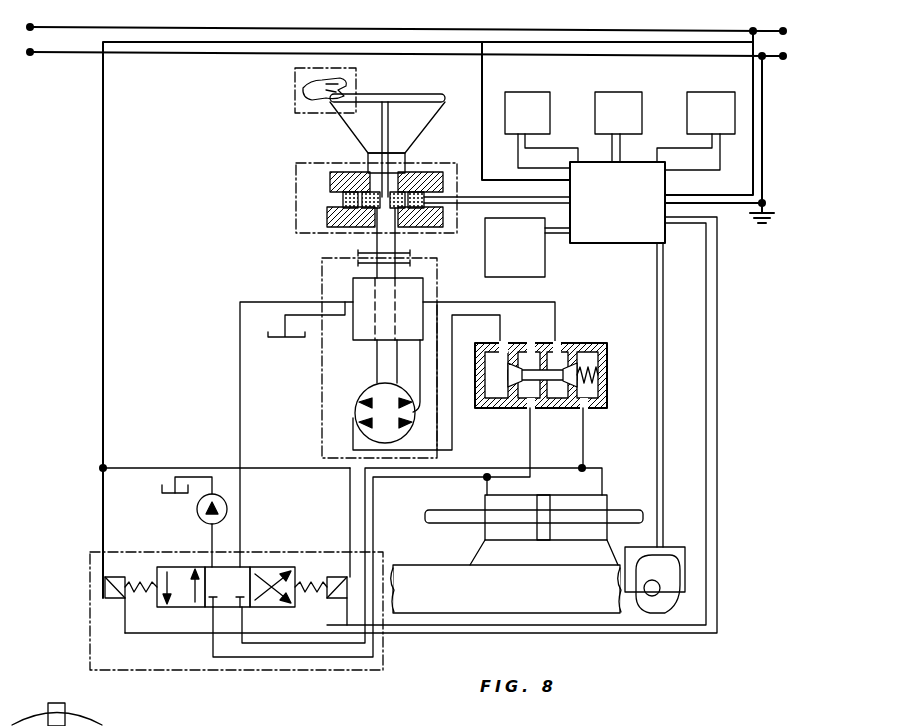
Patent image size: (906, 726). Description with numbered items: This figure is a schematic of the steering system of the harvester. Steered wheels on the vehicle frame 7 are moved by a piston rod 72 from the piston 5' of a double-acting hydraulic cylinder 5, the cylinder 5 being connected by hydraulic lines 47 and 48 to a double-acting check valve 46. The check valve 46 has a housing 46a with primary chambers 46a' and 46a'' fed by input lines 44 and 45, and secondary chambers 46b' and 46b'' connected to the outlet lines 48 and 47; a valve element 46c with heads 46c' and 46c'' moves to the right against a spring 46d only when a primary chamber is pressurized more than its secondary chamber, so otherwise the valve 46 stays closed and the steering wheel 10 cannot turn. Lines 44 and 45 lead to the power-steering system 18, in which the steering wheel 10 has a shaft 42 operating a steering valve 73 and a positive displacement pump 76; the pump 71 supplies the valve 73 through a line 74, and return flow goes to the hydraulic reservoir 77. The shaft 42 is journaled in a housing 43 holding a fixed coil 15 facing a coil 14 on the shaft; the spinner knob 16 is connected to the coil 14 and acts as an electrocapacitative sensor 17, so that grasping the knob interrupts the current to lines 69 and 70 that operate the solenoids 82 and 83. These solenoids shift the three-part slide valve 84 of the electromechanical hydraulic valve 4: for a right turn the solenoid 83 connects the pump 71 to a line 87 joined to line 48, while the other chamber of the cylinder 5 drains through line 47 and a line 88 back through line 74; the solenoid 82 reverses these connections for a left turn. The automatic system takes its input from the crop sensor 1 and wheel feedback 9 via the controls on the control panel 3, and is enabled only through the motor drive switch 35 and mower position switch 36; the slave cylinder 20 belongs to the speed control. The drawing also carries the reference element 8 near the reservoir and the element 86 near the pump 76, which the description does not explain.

The crop sensor 1 is at (540, 96).
The control panel 3 is at (612, 215).
The electromechanical hydraulic valve 4 is at (203, 569).
The hydraulic cylinder 5 is at (557, 508).
The piston 5' is at (547, 501).
The vehicle frame 7 is at (575, 602).
The tank assembly 8 is at (492, 613).
The feedback 9 is at (676, 552).
The steering wheel 10 is at (452, 91).
The coil 14 is at (402, 226).
The fixed coil 15 is at (298, 170).
The spinner knob 16 is at (304, 96).
The sensor 17 is at (362, 82).
The power-steering system 18 is at (320, 271).
The slave cylinder 20 is at (526, 258).
The motor drive switch 35 is at (736, 82).
The mower position switch 36 is at (644, 80).
The shaft 42 is at (368, 226).
The housing 43 is at (330, 220).
The hydraulic line 44 is at (486, 322).
The hydraulic line 45 is at (564, 347).
The double-acting check valve 46 is at (608, 382).
The housing 46a is at (621, 340).
The primary chamber 46a' is at (480, 421).
The primary chamber 46a'' is at (584, 331).
The secondary chamber 46b' is at (529, 327).
The secondary chamber 46b'' is at (620, 419).
The valve element 46c is at (550, 410).
The head 46c' is at (479, 402).
The head 46c'' is at (625, 362).
The spring 46d is at (598, 394).
The hydraulic line 47 is at (584, 440).
The hydraulic line 48 is at (528, 452).
The line 69 is at (706, 360).
The line 70 is at (717, 386).
The pump 71 is at (200, 506).
The piston rod 72 is at (452, 524).
The steering valve 73 is at (413, 287).
The line 74 is at (244, 524).
The positive displacement pump 76 is at (370, 433).
The hydraulic reservoir 77 is at (282, 344).
The solenoid 82 is at (104, 582).
The solenoid 83 is at (340, 578).
The three-part slide valve 84 is at (270, 575).
The pump 86 is at (426, 408).
The line 87 is at (318, 659).
The line 88 is at (300, 646).